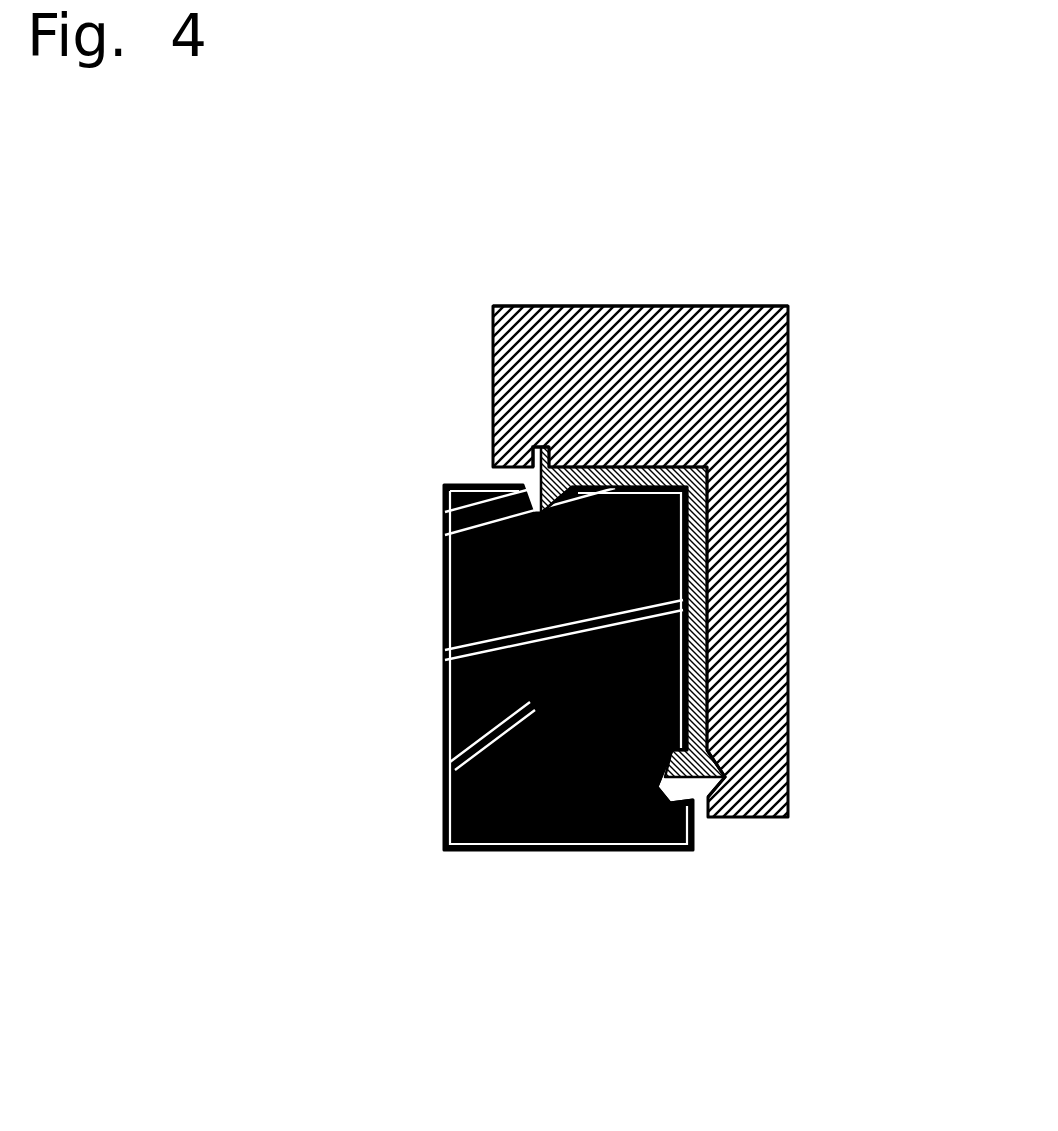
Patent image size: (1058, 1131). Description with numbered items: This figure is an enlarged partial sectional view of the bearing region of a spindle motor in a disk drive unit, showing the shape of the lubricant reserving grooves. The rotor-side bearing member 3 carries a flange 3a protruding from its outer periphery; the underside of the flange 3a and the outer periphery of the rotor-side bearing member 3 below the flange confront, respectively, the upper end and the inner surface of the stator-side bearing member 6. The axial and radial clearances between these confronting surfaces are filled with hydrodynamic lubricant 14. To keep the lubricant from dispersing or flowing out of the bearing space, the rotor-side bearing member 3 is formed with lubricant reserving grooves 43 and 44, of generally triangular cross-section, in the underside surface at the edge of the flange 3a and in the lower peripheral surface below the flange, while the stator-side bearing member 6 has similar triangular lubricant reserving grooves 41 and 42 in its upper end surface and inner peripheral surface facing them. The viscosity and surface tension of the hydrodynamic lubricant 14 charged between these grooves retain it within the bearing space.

The rotor-side bearing member 3 is at (745, 417).
The flange 3a is at (610, 385).
The stator-side bearing member 6 is at (445, 763).
The hydrodynamic lubricant 14 is at (443, 657).
The lubricant reserving groove 41 is at (530, 492).
The lubricant reserving groove 42 is at (683, 787).
The lubricant reserving groove 43 is at (520, 448).
The lubricant reserving groove 44 is at (727, 775).